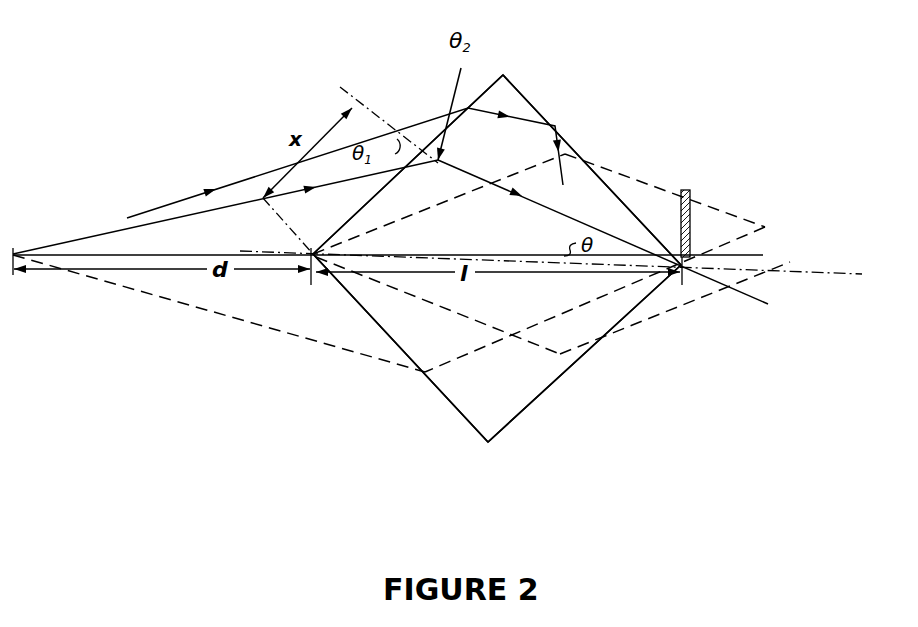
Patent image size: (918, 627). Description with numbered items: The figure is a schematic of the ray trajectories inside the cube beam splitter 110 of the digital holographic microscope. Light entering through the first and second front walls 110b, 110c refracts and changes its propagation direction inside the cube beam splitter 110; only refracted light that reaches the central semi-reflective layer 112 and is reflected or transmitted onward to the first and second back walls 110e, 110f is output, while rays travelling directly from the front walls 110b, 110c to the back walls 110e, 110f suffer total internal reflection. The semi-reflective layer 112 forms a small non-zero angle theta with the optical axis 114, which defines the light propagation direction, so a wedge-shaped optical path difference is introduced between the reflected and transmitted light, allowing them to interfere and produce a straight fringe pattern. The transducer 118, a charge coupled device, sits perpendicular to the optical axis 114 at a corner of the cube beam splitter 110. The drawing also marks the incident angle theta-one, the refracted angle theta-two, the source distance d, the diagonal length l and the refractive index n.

The cube beam splitter 110 is at (540, 419).
The first front wall 110b is at (438, 158).
The second front wall 110c is at (443, 396).
The first back wall 110e is at (560, 135).
The second back wall 110f is at (573, 360).
The semi-reflective layer 112 is at (613, 265).
The optical axis 114 is at (748, 256).
The transducer (charge coupled device, CCD) 118 is at (690, 190).